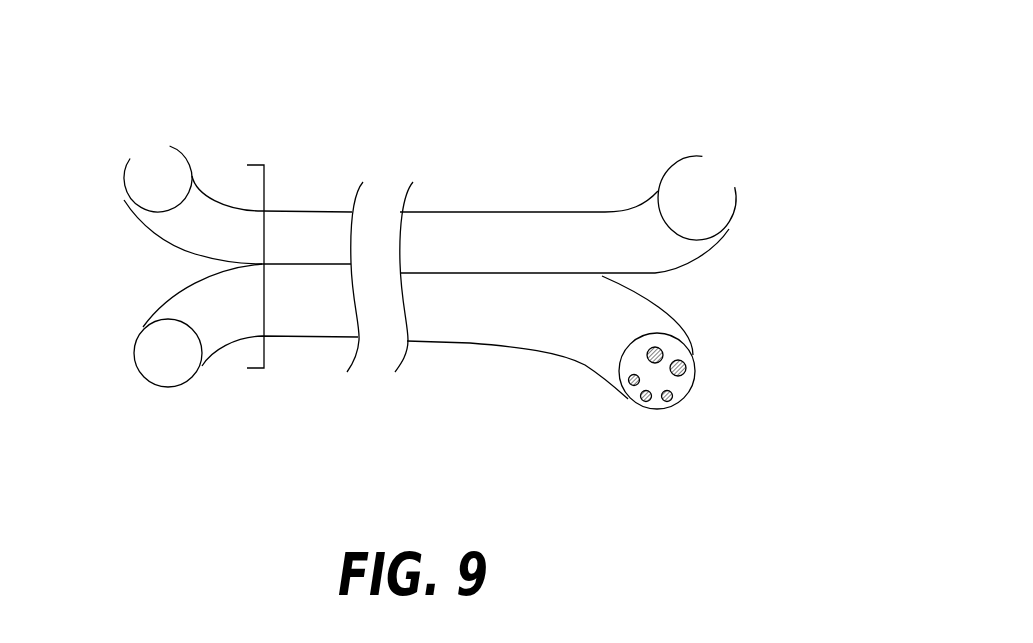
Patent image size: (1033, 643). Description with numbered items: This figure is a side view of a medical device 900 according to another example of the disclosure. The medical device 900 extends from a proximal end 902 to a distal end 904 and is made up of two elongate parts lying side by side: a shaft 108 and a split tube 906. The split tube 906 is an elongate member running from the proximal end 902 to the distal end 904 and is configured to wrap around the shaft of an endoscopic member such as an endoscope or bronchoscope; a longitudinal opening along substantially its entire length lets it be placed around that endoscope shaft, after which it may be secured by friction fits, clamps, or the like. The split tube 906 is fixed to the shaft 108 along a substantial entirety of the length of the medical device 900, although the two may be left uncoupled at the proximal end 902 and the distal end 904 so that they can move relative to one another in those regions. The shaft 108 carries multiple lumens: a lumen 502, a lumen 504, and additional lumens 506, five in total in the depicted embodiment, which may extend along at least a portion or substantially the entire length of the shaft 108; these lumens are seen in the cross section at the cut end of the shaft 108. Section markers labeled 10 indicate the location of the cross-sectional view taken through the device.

The medical device 900 is at (146, 97).
The proximal end 902 is at (151, 386).
The distal end 904 is at (640, 103).
The split tube 906 is at (497, 212).
The shaft 108 is at (458, 343).
The lumen 502 is at (662, 352).
The lumen 504 is at (688, 363).
The additional lumens 506 is at (668, 400).
The section line 10- 10 is at (246, 264).